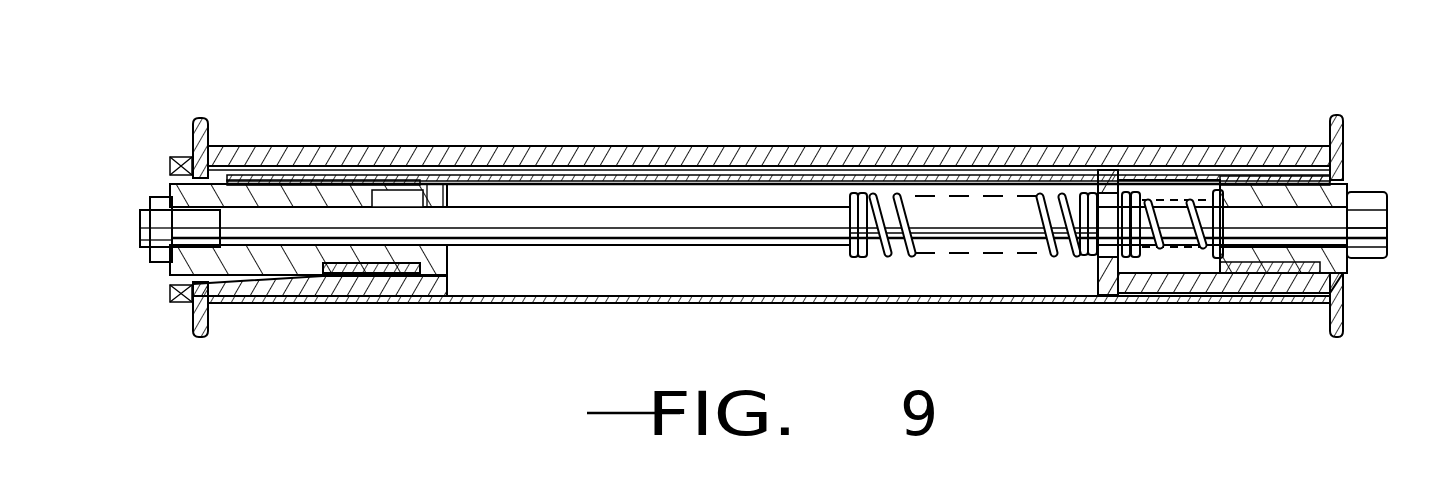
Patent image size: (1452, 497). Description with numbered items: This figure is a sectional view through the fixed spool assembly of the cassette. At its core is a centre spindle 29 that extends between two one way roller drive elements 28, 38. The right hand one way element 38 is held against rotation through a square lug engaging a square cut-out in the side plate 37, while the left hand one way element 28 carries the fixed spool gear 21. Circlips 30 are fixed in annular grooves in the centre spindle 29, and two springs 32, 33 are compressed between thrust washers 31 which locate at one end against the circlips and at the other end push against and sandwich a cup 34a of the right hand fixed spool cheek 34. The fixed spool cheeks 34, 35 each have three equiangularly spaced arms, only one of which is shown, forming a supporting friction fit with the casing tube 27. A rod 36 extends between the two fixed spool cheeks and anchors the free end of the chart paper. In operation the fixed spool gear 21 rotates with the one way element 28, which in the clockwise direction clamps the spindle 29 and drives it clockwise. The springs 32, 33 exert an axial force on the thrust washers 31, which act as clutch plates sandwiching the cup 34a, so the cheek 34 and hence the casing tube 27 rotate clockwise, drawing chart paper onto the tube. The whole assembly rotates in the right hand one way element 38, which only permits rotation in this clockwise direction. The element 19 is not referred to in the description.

The hub nut 19 is at (345, 276).
The fixed spool gear 21 is at (170, 150).
The casing tube 27 is at (590, 303).
The one way roller drive element 28 is at (395, 275).
The centre spindle 29 is at (510, 215).
The circlip 30 is at (850, 195).
The thrust washer 31 is at (1215, 190).
The spring 32 is at (905, 190).
The spring 33 is at (1198, 248).
The fixed spool cheek 34 is at (1343, 320).
The cup 34a is at (1118, 190).
The fixed spool cheek 35 is at (208, 335).
The rod 36 is at (360, 147).
The side plate 37 is at (1350, 258).
The one way roller drive element 38 is at (1252, 190).